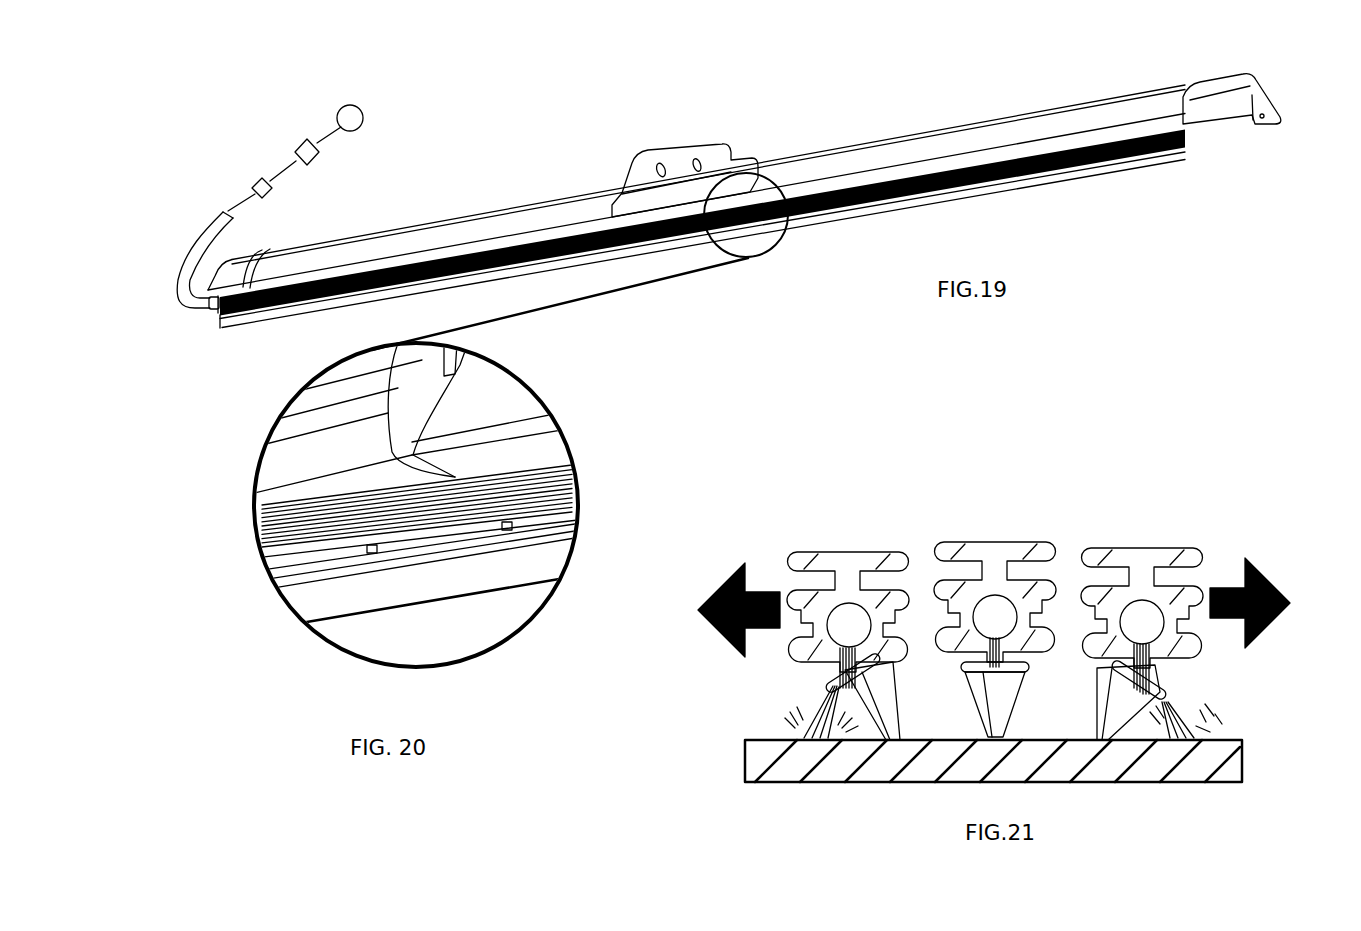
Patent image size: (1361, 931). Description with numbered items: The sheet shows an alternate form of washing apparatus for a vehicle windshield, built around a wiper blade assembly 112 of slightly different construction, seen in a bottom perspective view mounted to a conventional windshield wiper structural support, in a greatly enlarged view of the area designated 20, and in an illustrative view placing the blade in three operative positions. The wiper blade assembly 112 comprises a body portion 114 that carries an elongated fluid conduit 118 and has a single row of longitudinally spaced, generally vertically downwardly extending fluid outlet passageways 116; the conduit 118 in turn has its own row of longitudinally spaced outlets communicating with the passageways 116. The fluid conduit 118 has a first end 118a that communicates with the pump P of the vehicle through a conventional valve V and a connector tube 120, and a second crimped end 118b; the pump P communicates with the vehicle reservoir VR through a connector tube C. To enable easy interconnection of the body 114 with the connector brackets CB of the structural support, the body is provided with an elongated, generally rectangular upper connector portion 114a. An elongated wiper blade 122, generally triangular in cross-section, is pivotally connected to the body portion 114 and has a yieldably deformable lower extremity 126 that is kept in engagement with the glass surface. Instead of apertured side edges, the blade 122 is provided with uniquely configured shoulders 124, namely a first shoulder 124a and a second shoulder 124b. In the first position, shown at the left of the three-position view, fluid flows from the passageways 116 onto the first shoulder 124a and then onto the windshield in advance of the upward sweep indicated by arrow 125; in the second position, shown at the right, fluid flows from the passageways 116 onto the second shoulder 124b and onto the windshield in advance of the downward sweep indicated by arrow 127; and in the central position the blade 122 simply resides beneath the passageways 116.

In FIG. 19, the enlarged area 20 is at (782, 242).
In FIG. 19, the wiper blade assembly 112 is at (1118, 175).
In FIG. 20, the wiper blade assembly 112 is at (560, 598).
In FIG. 21, the wiper blade assembly 112 is at (970, 548).
In FIG. 21, the body portion 114 is at (877, 593).
In FIG. 21, the upper connector portion 114a is at (813, 563).
In FIG. 20, the fluid outlet passageways 116 is at (372, 548).
In FIG. 21, the fluid outlet passageways 116 is at (852, 652).
In FIG. 21, the fluid conduit 118 is at (849, 625).
In FIG. 19, the first end 118a is at (213, 310).
In FIG. 19, the second crimped end 118b is at (1260, 133).
In FIG. 19, the connector tube 120 is at (180, 258).
In FIG. 19, the wiper blade 122 is at (1200, 160).
In FIG. 20, the wiper blade 122 is at (417, 587).
In FIG. 21, the wiper blade 122 is at (992, 695).
In FIG. 21, the shoulders 124 is at (968, 676).
In FIG. 21, the first shoulder 124a is at (822, 693).
In FIG. 21, the second shoulder 124b is at (1020, 670).
In FIG. 21, the arrow 125 is at (712, 585).
In FIG. 20, the lower extremity 126 is at (348, 617).
In FIG. 21, the lower extremity 126 is at (888, 740).
In FIG. 21, the arrow 127 is at (1265, 575).
In FIG. 19, the connector brackets CB is at (713, 147).
In FIG. 19, the vehicle reservoir VR is at (347, 110).
In FIG. 19, the pump P is at (298, 143).
In FIG. 19, the valve V is at (278, 197).
In FIG. 19, the connector tube C is at (330, 138).